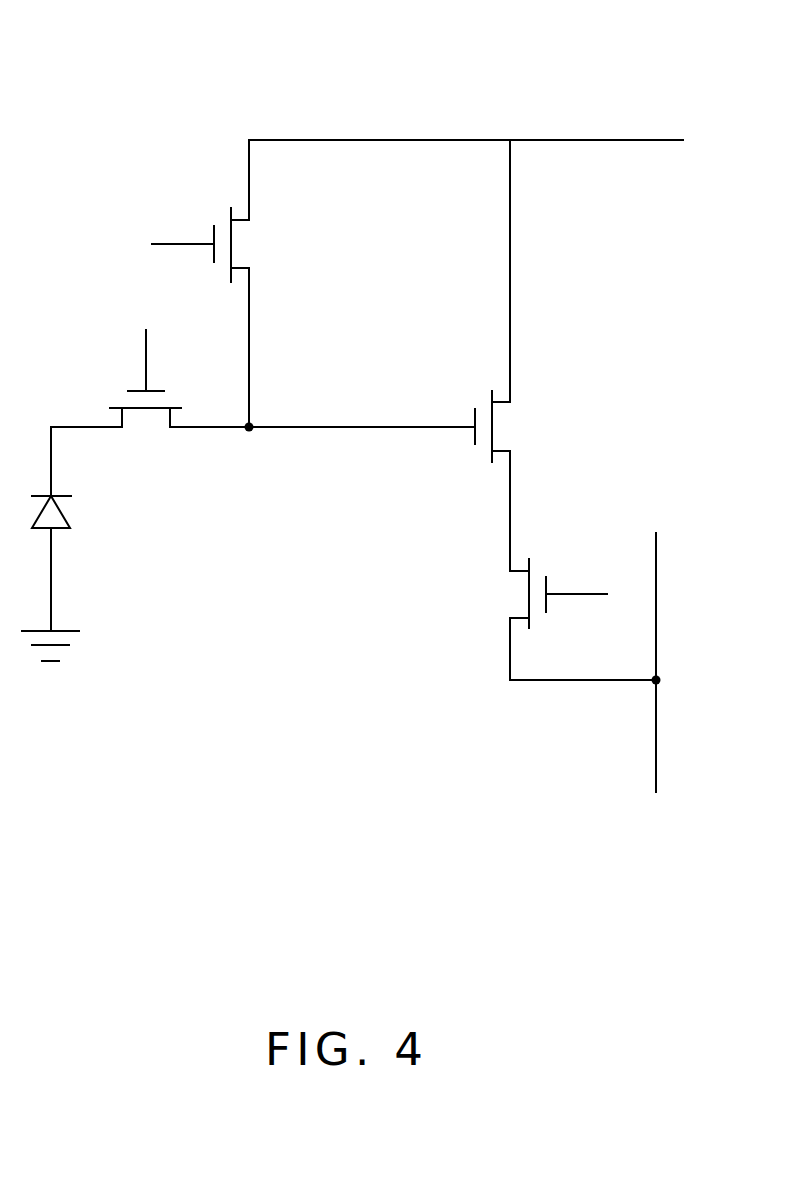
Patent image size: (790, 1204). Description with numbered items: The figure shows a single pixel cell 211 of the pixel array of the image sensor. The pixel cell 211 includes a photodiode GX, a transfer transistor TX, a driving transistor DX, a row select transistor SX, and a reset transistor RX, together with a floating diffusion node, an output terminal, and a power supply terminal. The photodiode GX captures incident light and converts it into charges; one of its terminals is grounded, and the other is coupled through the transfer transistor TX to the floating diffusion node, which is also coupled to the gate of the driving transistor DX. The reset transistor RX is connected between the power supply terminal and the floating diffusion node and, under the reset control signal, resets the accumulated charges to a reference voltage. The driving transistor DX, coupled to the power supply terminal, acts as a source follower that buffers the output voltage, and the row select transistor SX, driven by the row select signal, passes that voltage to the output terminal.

The pixel cell 211 is at (417, 43).
The reset transistor RX is at (246, 244).
The transfer transistor TX is at (146, 426).
The photodiode GX is at (72, 544).
The driving transistor DX is at (508, 427).
The row select transistor SX is at (475, 594).